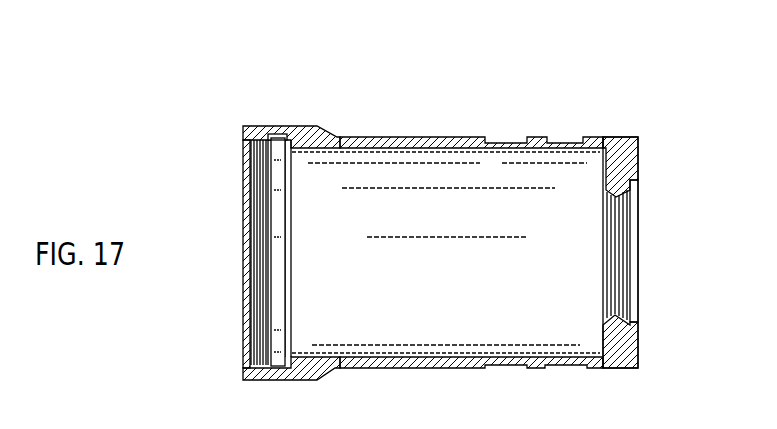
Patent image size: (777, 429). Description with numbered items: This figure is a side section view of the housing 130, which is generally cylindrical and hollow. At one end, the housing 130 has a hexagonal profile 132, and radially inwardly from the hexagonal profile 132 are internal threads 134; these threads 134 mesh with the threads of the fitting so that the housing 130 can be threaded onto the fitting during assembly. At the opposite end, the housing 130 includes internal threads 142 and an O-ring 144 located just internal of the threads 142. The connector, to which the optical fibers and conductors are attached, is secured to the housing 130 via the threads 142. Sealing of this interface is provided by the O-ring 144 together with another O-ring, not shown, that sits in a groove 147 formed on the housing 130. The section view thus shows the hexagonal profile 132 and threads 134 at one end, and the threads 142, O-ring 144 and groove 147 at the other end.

The housing 130 is at (492, 110).
The hexagonal profile 132 is at (614, 145).
The internal threads 134 is at (618, 242).
The internal threads 142 is at (253, 293).
The O-ring 144 is at (283, 130).
The groove 147 is at (638, 193).